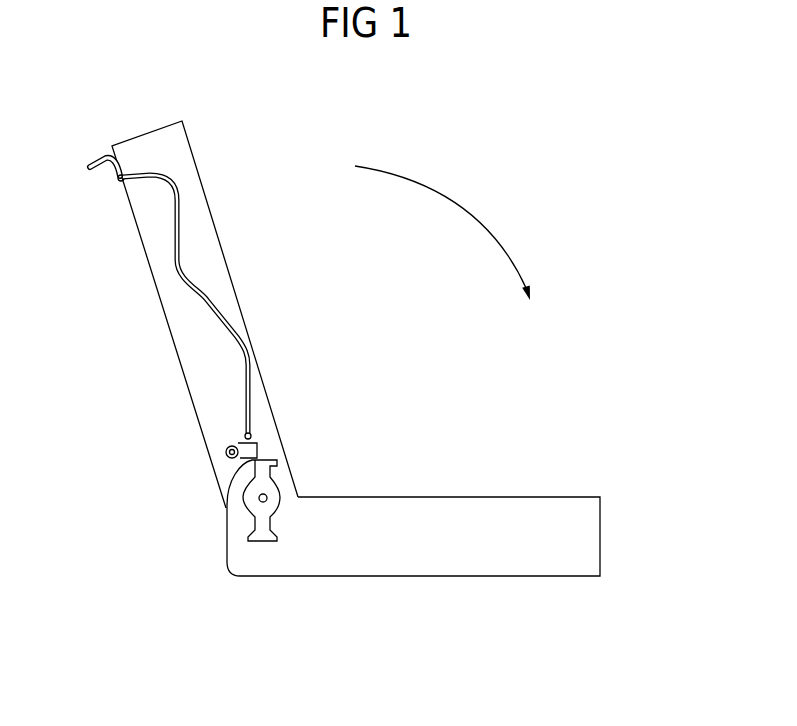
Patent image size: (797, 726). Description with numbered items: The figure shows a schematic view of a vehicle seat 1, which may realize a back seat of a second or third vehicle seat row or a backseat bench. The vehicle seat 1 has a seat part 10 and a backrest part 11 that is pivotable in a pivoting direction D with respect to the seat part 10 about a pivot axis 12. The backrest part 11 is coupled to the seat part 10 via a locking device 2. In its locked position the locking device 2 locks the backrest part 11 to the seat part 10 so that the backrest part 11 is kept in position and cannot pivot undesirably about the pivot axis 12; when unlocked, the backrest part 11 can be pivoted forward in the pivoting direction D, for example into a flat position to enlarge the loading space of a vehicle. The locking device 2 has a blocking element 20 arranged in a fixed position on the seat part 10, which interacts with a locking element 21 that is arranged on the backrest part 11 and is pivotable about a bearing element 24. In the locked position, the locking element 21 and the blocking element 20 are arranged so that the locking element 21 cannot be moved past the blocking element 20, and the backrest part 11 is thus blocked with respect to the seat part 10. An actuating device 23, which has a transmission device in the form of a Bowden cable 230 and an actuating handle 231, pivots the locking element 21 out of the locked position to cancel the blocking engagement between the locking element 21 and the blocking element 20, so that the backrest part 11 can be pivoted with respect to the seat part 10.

The vehicle seat 1 is at (240, 146).
The locking device 2 is at (209, 517).
The seat part 10 is at (467, 558).
The backrest part 11 is at (180, 320).
The pivot axis 12 is at (266, 495).
The blocking element 20 is at (258, 530).
The locking element 21 is at (194, 448).
The actuating device 23 is at (95, 146).
The bearing element 24 is at (226, 453).
The Bowden cable 230 is at (180, 270).
The actuating handle 231 is at (88, 172).